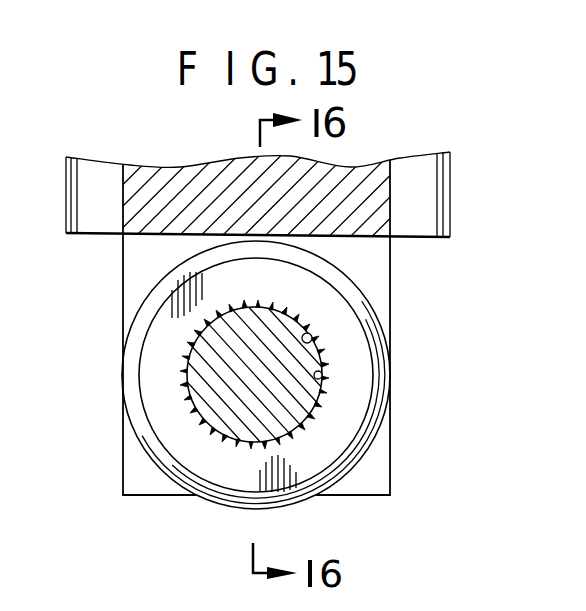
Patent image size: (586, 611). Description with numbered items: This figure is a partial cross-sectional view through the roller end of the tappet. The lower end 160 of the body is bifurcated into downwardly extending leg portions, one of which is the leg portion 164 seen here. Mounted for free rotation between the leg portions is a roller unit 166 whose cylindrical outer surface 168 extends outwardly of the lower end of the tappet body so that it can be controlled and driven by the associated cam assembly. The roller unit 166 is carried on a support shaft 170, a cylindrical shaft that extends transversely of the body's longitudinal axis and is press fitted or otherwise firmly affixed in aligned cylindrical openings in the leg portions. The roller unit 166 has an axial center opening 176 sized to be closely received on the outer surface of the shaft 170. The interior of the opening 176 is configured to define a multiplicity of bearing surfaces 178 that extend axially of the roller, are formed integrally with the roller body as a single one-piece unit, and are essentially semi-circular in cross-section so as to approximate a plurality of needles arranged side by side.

The lower end 160 is at (102, 237).
The leg portion 164 is at (121, 433).
The roller unit 166 is at (384, 420).
The cylindrical outer surface 168 is at (348, 466).
The support shaft 170 is at (290, 417).
The axial center opening 176 is at (311, 333).
The bearing surfaces 178 is at (322, 372).